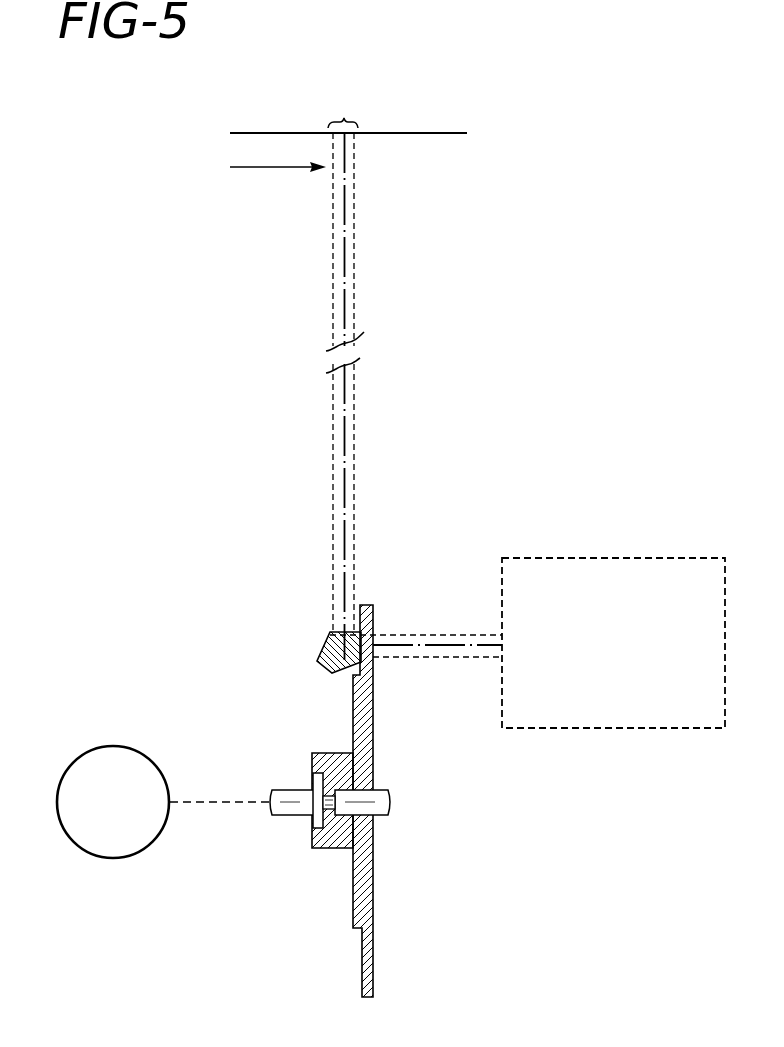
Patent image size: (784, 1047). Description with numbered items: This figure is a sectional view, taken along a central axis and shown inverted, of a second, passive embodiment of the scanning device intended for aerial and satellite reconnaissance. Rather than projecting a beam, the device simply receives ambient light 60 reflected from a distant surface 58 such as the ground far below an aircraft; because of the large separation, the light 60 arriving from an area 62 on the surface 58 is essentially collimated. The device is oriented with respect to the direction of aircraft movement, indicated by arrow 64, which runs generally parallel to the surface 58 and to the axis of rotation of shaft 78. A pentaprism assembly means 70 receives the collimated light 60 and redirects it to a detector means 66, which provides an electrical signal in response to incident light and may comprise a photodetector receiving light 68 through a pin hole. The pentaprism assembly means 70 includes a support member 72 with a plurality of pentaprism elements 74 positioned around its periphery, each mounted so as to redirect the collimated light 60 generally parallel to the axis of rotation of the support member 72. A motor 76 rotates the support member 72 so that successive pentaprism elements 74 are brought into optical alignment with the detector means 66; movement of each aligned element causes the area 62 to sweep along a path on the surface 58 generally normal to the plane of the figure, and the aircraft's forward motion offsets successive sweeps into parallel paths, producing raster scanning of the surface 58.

The surface 58 is at (404, 135).
The collimated light 60 is at (355, 408).
The area 62 is at (342, 112).
The arrow indicating direction of movement 64 is at (262, 167).
The detector means 66 is at (658, 729).
The light received by detector 68 is at (433, 657).
The pentaprism assembly means 70 is at (413, 718).
The support member 72 is at (374, 852).
The pentaprism element 74 is at (317, 664).
The motor 76 is at (84, 763).
The shaft 78 is at (393, 797).